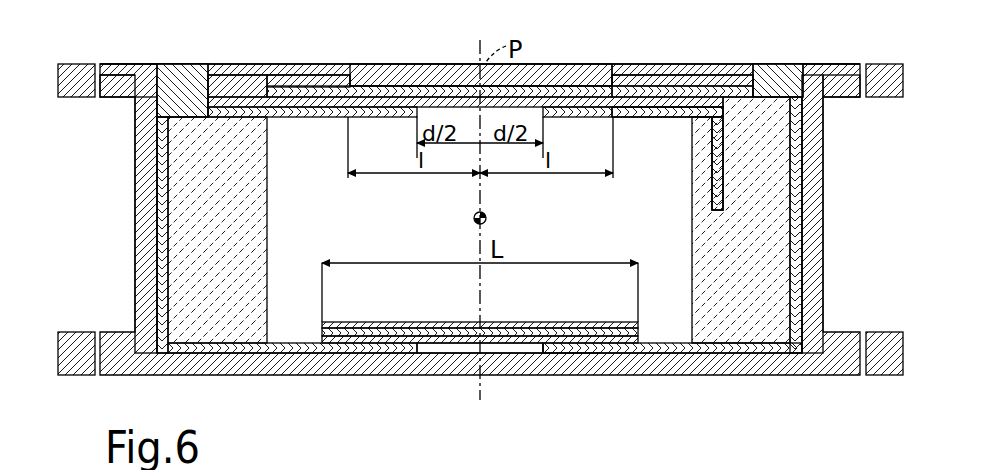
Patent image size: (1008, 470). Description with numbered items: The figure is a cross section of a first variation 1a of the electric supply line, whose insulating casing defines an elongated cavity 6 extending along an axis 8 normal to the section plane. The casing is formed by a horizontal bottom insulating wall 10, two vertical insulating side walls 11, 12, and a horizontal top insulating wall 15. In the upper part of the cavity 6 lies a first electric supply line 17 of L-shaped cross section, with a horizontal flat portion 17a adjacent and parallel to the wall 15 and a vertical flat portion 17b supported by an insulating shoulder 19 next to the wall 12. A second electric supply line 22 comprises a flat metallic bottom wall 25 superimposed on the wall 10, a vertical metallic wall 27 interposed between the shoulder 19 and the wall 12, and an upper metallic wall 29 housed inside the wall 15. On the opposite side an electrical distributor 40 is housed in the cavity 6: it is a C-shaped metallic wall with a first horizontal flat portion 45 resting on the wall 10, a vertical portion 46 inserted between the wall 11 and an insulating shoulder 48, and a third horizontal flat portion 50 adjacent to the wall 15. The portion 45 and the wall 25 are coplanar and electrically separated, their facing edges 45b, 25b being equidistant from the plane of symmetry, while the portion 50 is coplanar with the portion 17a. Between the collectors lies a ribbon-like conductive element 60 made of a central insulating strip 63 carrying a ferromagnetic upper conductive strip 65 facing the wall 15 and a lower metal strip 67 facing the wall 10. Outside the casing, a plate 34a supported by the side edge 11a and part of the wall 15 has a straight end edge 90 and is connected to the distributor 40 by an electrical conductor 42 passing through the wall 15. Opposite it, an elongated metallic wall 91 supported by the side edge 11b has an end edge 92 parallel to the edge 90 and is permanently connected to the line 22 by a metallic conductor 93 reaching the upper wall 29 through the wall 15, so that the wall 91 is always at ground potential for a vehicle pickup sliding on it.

The supply line variation 1a is at (630, 54).
The cavity 6 is at (306, 298).
The axis 8 is at (472, 218).
The bottom insulating wall 10 is at (120, 350).
The side wall 11 is at (148, 224).
The side edge 11a is at (118, 92).
The side edge 11b is at (840, 92).
The side wall 12 is at (815, 202).
The top insulating wall 15 is at (230, 88).
The first electric supply line 17 is at (715, 170).
The first horizontal flat portion 17a is at (678, 134).
The second vertical flat portion 17b is at (690, 182).
The shoulder 19 is at (716, 233).
The second electric supply line 22 is at (680, 318).
The bottom wall 25 is at (700, 352).
The edge 25b is at (545, 346).
The vertical metallic wall 27 is at (802, 237).
The upper metallic wall 29 is at (285, 90).
The plate 34a is at (120, 50).
The electrical distributor 40 is at (335, 132).
The electrical conductor 42 is at (172, 80).
The first horizontal flat portion 45 is at (398, 348).
The edge 45b is at (420, 346).
The second vertical portion 46 is at (160, 258).
The shoulder 48 is at (192, 192).
The third horizontal flat portion 50 is at (318, 112).
The ribbon-like conductive element 60 is at (558, 290).
The central portion 63 is at (380, 330).
The upper conductive strip 65 is at (405, 338).
The metal strip 67 is at (503, 340).
The end edge 90 is at (353, 63).
The metallic wall 91 is at (812, 66).
The end edge 92 is at (609, 63).
The metallic conductor 93 is at (770, 88).